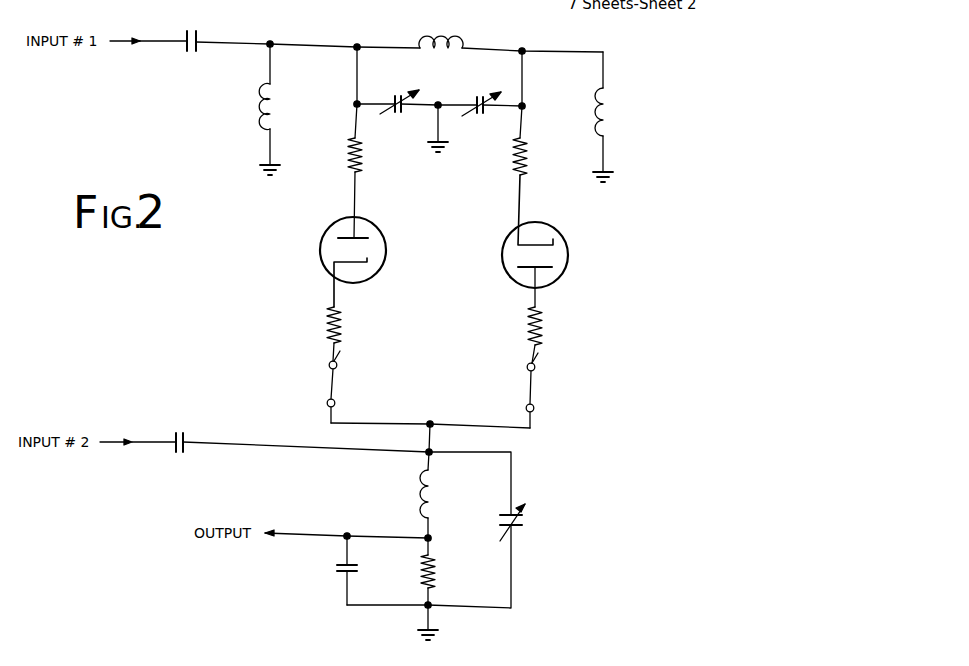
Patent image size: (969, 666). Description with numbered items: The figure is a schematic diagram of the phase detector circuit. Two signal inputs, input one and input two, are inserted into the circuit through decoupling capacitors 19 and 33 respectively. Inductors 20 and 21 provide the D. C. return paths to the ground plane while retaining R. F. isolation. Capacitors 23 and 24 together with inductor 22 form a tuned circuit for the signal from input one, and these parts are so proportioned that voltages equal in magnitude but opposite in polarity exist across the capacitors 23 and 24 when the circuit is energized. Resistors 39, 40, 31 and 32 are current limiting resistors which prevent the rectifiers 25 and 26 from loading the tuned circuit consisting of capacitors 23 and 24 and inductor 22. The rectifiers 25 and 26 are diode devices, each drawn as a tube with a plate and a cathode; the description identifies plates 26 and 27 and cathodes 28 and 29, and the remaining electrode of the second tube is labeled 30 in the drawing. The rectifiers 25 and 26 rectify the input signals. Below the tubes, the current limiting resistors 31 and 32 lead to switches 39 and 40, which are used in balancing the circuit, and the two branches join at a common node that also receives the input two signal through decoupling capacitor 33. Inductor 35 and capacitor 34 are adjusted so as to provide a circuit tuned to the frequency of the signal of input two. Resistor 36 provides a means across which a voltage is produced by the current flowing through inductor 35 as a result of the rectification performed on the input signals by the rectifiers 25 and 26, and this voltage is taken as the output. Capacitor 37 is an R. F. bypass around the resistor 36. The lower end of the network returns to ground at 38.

The decoupling capacitor 19 is at (197, 35).
The inductor 20 is at (278, 84).
The inductor 21 is at (612, 92).
The inductor 22 is at (465, 44).
The capacitor 23 is at (397, 95).
The capacitor 24 is at (480, 96).
The rectifier 25 is at (320, 240).
The rectifier 26 is at (568, 252).
The plate 27 is at (364, 236).
The cathode 28 is at (364, 266).
The cathode 29 is at (552, 240).
The cathode of tube 26 30 is at (550, 270).
The current limiting resistor 31 is at (326, 330).
The current limiting resistor 32 is at (544, 330).
The decoupling capacitor 33 is at (188, 436).
The capacitor 34 is at (520, 526).
The inductor 35 is at (437, 477).
The resistor 36 is at (432, 560).
The capacitor 37 is at (342, 572).
The ground 38 is at (436, 630).
The current limiting resistor / switch 39 is at (362, 143).
The current limiting resistor / switch 40 is at (527, 146).